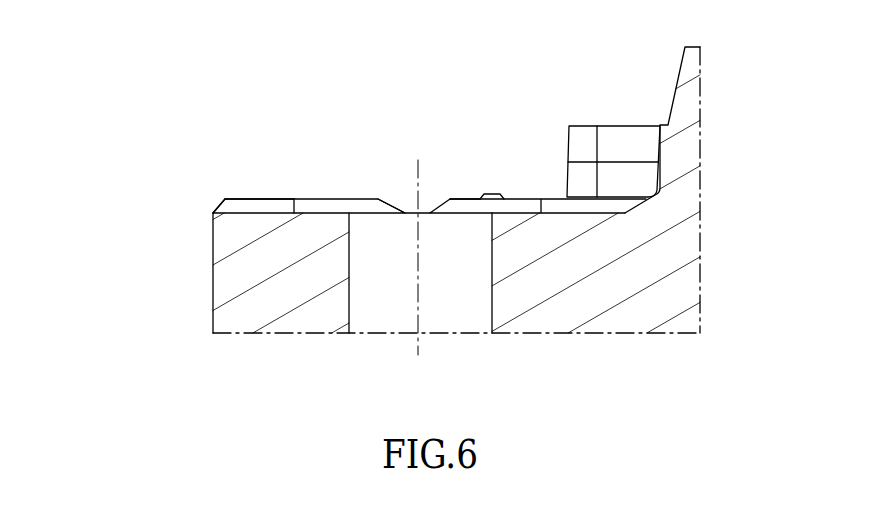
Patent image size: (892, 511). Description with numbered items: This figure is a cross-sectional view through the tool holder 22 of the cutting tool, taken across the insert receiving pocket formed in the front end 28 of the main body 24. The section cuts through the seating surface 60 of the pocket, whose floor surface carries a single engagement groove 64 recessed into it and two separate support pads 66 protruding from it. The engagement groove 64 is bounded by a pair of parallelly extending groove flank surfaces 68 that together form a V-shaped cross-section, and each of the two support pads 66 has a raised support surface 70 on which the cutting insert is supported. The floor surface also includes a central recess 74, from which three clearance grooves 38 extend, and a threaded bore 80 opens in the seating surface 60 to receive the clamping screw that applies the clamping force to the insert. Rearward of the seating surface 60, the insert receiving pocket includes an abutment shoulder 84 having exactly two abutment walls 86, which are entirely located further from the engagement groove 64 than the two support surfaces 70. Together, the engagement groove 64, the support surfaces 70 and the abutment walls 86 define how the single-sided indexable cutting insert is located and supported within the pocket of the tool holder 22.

The tool holder 22 is at (597, 346).
The main body 24 is at (646, 229).
The front end 28 is at (211, 278).
The clearance grooves 38 is at (408, 206).
The seating surface 60 is at (317, 200).
The engagement groove 64 is at (237, 208).
The support pads 66 is at (502, 195).
The groove flank surfaces 68 is at (268, 206).
The raised support surface 70 is at (492, 195).
The central recess 74 is at (377, 204).
The threaded bore 80 is at (451, 287).
The abutment shoulder 84 is at (618, 140).
The abutment walls 86 is at (578, 127).